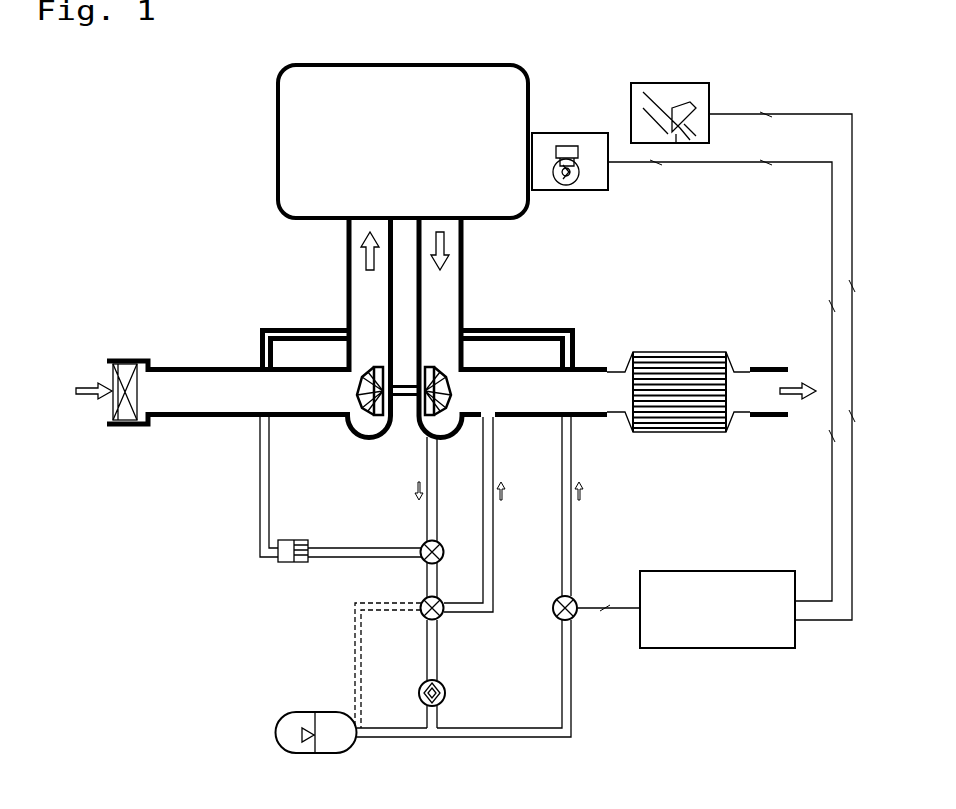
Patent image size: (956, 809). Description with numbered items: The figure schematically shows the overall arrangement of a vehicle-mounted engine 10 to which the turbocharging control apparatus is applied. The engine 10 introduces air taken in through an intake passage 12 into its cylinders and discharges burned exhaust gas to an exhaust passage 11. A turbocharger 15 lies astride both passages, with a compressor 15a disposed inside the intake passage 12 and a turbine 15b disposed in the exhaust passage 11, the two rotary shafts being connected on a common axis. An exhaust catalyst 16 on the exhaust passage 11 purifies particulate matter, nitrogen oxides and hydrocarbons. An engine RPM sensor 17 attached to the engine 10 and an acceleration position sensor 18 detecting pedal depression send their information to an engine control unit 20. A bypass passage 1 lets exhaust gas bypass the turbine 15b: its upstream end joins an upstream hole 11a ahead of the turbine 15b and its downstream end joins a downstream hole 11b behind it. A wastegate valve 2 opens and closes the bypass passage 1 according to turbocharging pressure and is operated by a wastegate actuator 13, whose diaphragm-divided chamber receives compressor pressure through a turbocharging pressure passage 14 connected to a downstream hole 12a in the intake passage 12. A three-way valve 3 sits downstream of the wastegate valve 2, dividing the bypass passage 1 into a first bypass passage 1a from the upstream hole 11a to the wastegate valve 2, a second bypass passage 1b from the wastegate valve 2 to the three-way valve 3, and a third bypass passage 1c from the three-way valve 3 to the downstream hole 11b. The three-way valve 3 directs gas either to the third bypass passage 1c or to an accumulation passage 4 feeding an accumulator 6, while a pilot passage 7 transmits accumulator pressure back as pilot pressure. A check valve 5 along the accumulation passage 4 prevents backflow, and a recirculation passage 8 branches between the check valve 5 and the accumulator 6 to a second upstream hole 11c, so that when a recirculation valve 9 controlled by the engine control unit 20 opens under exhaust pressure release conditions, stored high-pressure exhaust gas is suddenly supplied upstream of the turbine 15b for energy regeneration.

The bypass passage 1 is at (500, 527).
The first bypass passage 1a is at (427, 505).
The second bypass passage 1b is at (440, 592).
The third bypass passage 1c is at (495, 612).
The wastegate valve 2 is at (421, 558).
The three-way valve 3 is at (440, 618).
The accumulation passage 4 is at (452, 665).
The check valve 5 is at (419, 693).
The accumulator 6 is at (275, 735).
The pilot passage 7 is at (355, 655).
The recirculation passage 8 is at (585, 728).
The recirculation valve 9 is at (580, 597).
The engine 10 is at (391, 157).
The exhaust passage 11 is at (483, 252).
The upstream hole 11a is at (447, 433).
The downstream hole 11b is at (493, 396).
The second upstream hole 11c is at (450, 330).
The intake passage 12 is at (337, 252).
The downstream hole 12a is at (362, 330).
The wastegate actuator 13 is at (292, 563).
The turbocharging pressure passage 14 is at (251, 505).
The turbocharger 15 is at (367, 434).
The compressor 15a is at (362, 417).
The turbine 15b is at (432, 430).
The exhaust catalyst 16 is at (677, 352).
The engine RPM sensor 17 is at (566, 132).
The acceleration position sensor 18 is at (668, 82).
The engine control unit 20 is at (733, 650).